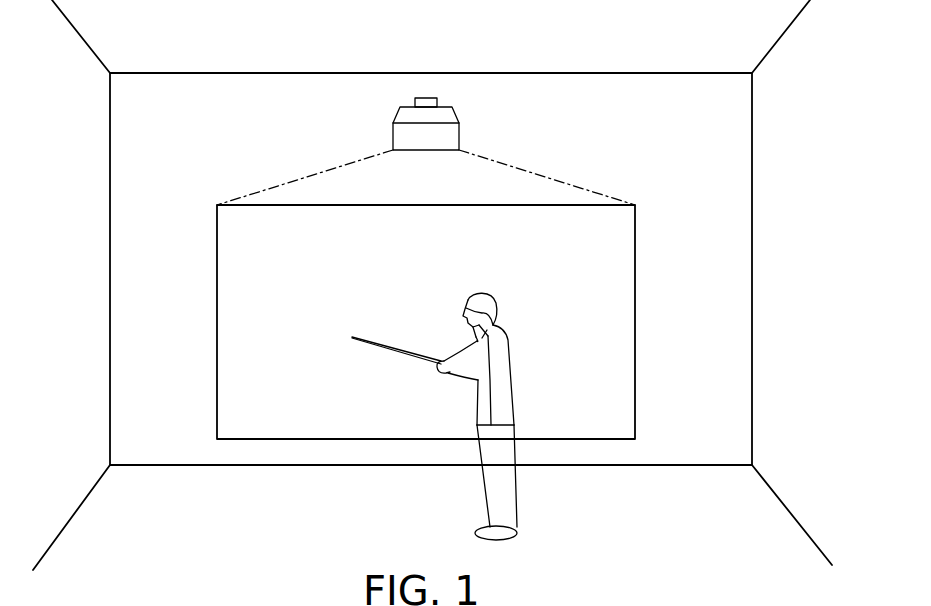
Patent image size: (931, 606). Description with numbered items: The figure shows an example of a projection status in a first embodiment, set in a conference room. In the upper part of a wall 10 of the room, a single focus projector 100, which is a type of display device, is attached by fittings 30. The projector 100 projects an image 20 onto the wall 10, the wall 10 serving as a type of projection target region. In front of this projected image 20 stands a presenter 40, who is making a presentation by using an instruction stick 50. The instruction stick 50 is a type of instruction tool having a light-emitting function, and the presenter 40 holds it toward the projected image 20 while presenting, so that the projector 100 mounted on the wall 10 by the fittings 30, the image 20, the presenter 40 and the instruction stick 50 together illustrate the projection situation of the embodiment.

The wall 10 is at (723, 124).
The image 20 is at (483, 204).
The fittings 30 is at (443, 107).
The single focus projector 100 is at (460, 134).
The presenter 40 is at (505, 371).
The instruction stick 50 is at (375, 347).